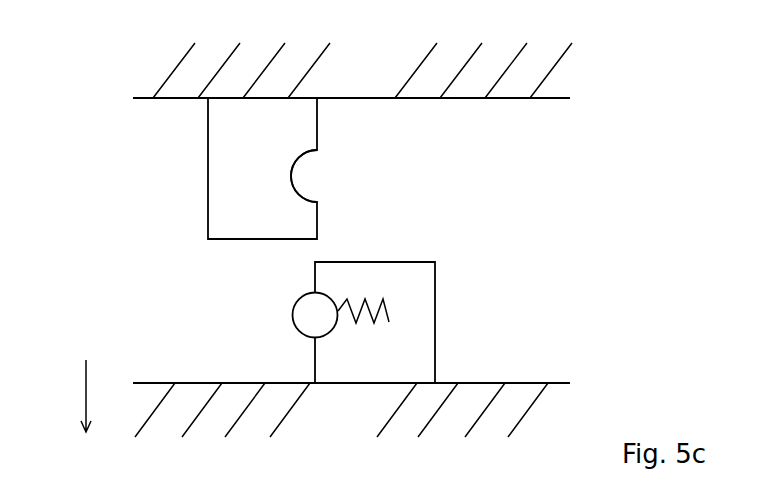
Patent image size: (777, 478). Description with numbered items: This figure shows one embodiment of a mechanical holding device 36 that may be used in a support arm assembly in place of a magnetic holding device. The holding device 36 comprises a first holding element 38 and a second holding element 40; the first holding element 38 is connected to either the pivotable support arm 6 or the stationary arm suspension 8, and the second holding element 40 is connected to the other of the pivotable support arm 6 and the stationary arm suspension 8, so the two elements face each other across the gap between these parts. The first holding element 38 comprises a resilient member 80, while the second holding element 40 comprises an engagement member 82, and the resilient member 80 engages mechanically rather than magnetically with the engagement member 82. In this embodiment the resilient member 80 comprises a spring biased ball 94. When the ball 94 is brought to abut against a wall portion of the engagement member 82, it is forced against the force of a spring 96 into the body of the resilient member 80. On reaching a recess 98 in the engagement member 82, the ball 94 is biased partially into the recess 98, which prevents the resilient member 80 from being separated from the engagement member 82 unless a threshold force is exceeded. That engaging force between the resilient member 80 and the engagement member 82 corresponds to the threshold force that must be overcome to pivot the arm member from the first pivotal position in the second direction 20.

The pivotable support arm 6 is at (352, 70).
The stationary arm suspension 8 is at (351, 410).
The second direction 20 is at (86, 386).
The holding device 36 is at (602, 235).
The first holding element 38 is at (518, 332).
The second holding element 40 is at (463, 172).
The resilient member 80 is at (425, 325).
The engagement member 82 is at (227, 158).
The ball 94 is at (303, 318).
The spring 96 is at (368, 298).
The recess 98 is at (321, 180).